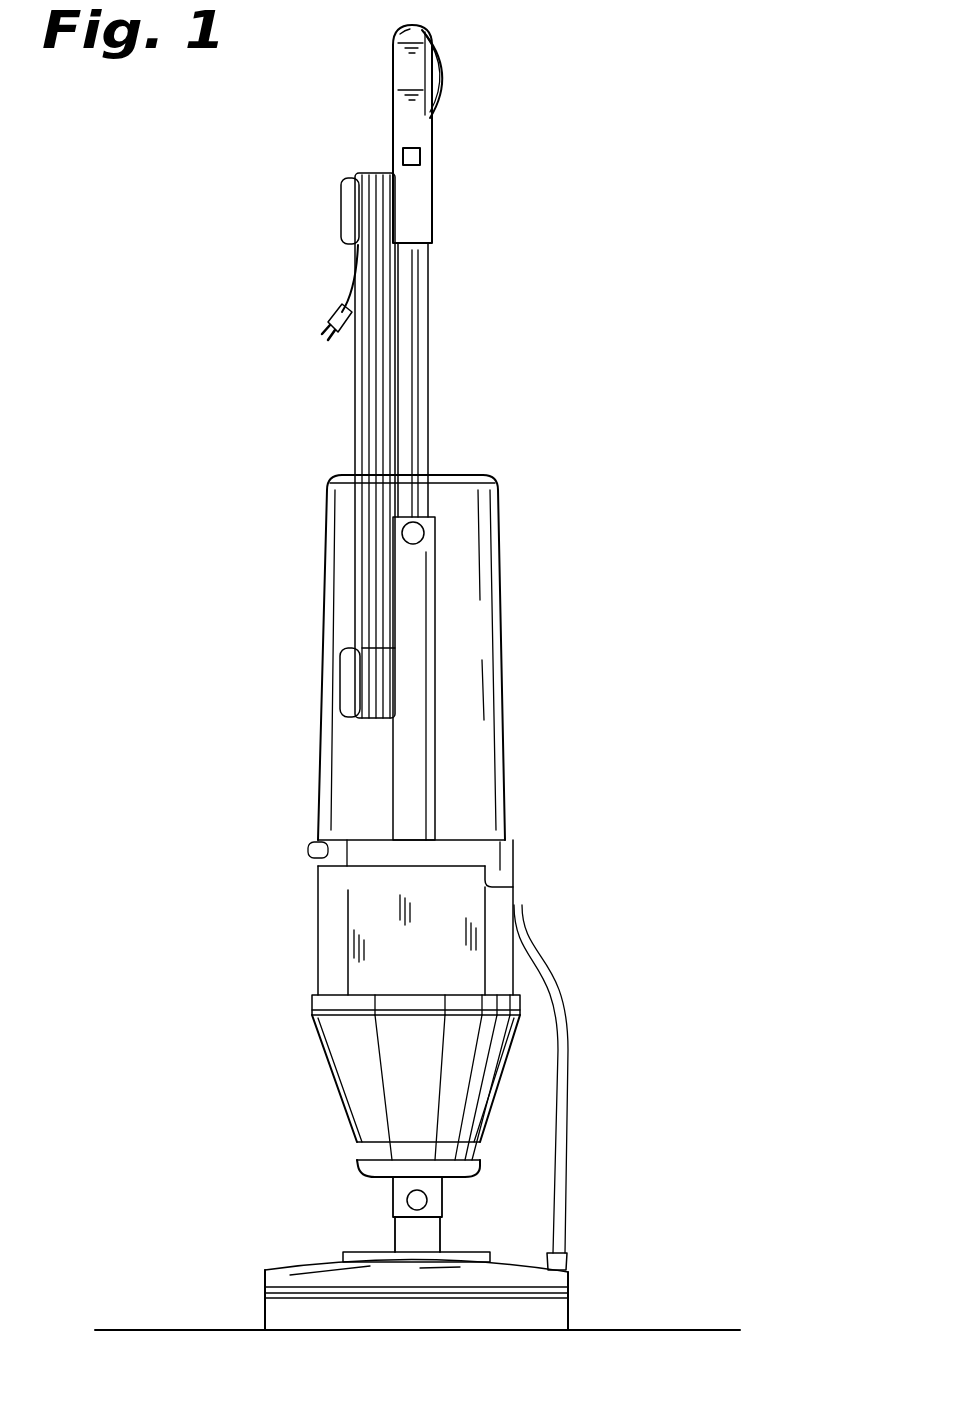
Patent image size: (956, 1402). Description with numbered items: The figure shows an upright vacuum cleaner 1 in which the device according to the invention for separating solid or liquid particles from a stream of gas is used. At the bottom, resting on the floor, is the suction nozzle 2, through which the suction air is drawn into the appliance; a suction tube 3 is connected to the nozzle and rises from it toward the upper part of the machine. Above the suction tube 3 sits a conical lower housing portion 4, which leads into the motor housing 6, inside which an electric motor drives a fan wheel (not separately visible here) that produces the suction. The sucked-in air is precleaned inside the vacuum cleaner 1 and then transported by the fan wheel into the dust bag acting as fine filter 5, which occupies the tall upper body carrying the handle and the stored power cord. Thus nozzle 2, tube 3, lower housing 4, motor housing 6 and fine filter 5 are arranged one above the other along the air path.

The vacuum cleaner 1 is at (517, 912).
The suction nozzle 2 is at (450, 1281).
The suction tube 3 is at (440, 1212).
The conical lower housing 4 is at (468, 1062).
The fine filter 5 is at (460, 615).
The motor housing 6 is at (445, 897).